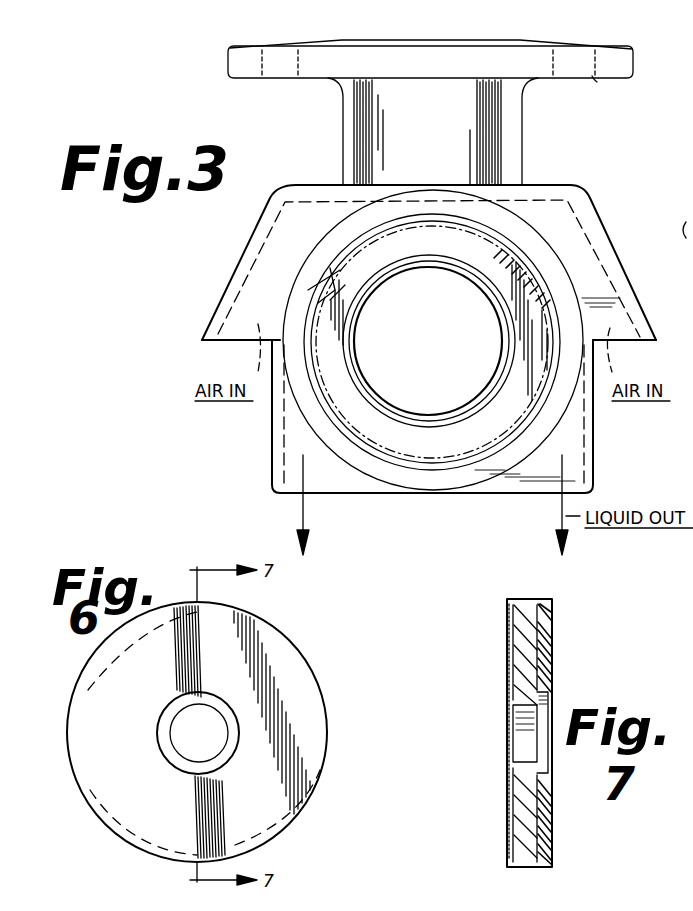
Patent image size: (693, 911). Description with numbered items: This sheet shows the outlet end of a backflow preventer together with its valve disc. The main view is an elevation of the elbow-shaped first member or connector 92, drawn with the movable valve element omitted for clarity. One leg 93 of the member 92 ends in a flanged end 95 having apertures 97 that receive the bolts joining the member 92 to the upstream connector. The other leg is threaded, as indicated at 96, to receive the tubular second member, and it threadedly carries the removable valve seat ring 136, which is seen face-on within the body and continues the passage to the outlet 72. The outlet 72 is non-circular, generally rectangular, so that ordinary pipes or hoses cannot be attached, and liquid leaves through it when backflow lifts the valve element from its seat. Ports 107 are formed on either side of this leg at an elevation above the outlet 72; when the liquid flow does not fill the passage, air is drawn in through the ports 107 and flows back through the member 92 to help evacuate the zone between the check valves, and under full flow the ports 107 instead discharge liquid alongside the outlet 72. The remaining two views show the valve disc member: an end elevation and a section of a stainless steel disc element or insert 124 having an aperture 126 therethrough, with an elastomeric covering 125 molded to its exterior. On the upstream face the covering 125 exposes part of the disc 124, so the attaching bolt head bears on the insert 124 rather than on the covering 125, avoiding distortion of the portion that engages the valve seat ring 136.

In FIG. 3, the outlet port 72 is at (484, 496).
In FIG. 3, the elbow-shaped first member 92 is at (598, 200).
In FIG. 3, the leg of the first member 93 is at (524, 157).
In FIG. 3, the flanged end 95 is at (635, 68).
In FIG. 3, the threaded portion 96 is at (410, 478).
In FIG. 3, the apertures 97 is at (596, 82).
In FIG. 3, the ports 107 is at (214, 341).
In FIG. 3, the valve seat ring 136 is at (502, 350).
In FIG. 6, the disc element 124 is at (305, 677).
In FIG. 7, the disc element 124 is at (510, 620).
In FIG. 6, the elastomeric covering 125 is at (140, 694).
In FIG. 7, the elastomeric covering 125 is at (553, 650).
In FIG. 6, the aperture 126 is at (175, 748).
In FIG. 7, the aperture 126 is at (520, 712).